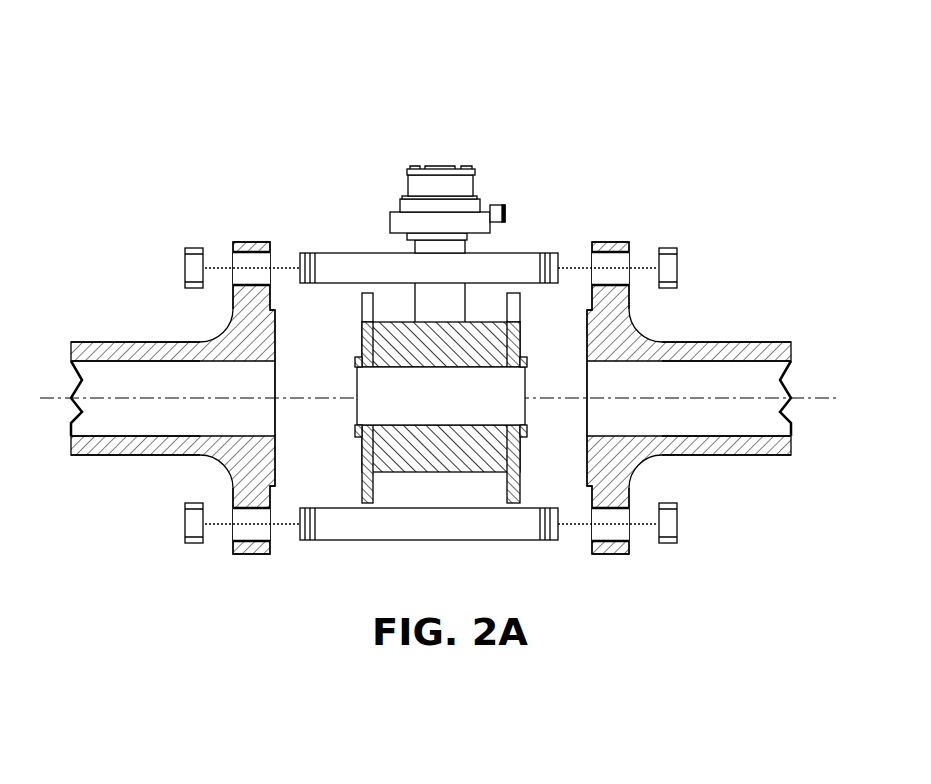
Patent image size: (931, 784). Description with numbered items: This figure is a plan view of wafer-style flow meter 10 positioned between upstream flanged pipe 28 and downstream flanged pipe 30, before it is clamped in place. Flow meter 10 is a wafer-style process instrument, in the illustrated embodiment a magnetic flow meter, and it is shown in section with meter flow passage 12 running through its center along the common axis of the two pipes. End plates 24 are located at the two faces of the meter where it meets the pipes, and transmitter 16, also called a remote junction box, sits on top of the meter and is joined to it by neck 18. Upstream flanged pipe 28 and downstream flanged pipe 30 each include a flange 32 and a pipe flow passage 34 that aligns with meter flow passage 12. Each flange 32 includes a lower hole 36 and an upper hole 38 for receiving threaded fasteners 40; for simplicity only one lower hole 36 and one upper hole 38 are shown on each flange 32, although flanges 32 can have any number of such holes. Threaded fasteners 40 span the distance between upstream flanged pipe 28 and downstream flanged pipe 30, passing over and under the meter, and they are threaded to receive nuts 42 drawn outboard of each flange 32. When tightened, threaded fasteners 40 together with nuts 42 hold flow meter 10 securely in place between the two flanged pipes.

The wafer-style flow meter 10 is at (439, 319).
The meter flow passage 12 is at (443, 400).
The transmitter 16 is at (475, 184).
The neck 18 is at (466, 247).
The end plates 24 is at (360, 337).
The upstream flanged pipe 28 is at (113, 328).
The downstream flanged pipe 30 is at (728, 328).
The flanges 32 is at (245, 232).
The pipe flow passages 34 is at (98, 422).
The lower holes 36 is at (263, 527).
The upper holes 38 is at (261, 273).
The threaded fasteners 40 is at (342, 253).
The nuts 42 is at (184, 270).